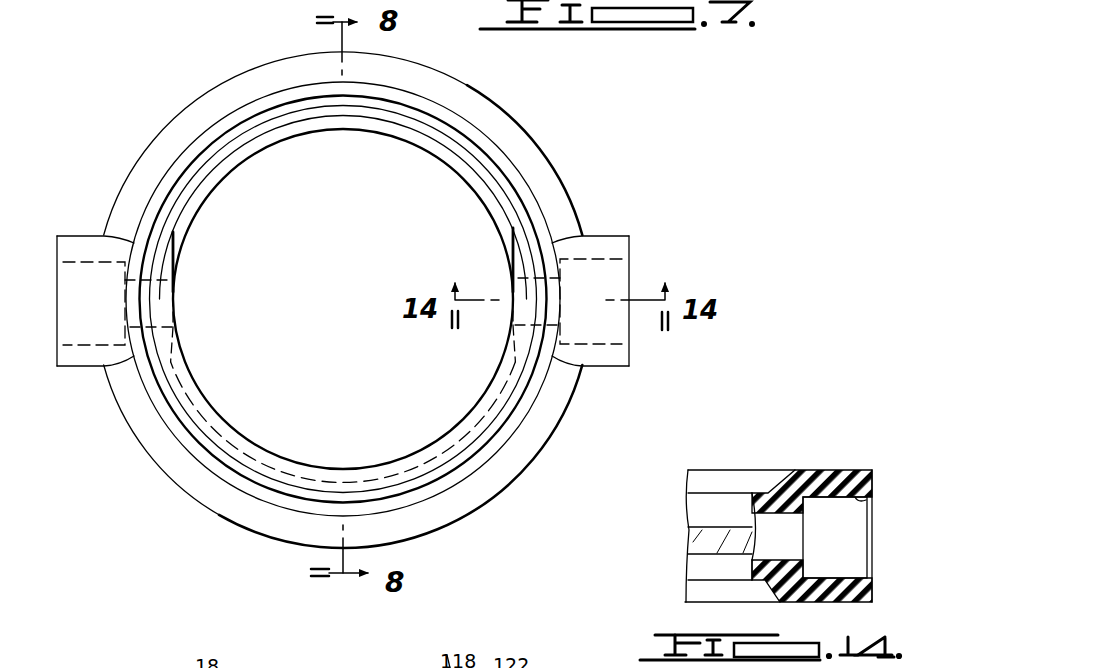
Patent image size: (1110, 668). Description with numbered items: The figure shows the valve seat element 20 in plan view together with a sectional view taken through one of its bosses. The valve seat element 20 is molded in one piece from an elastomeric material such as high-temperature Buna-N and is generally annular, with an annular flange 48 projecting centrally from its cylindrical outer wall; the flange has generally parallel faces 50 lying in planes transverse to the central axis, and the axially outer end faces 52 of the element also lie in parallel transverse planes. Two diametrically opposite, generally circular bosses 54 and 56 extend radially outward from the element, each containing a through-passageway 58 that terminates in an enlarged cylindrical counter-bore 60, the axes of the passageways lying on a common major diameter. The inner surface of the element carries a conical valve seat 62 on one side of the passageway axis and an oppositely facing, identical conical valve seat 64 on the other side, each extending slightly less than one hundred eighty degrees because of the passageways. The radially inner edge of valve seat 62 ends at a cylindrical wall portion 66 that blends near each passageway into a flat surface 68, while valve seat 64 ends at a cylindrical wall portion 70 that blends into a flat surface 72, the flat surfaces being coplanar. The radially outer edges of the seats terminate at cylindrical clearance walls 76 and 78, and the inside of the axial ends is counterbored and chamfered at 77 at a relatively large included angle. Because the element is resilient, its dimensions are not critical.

In FIG. 7, the valve seat element 20 is at (527, 124).
In FIG. 14, the valve seat element 20 is at (807, 517).
In FIG. 7, the annular flange 48 is at (523, 457).
In FIG. 7, the parallel faces 50 is at (138, 417).
In FIG. 7, the axially outer end faces 52 is at (177, 425).
In FIG. 7, the boss 54 is at (70, 266).
In FIG. 7, the boss 56 is at (606, 339).
In FIG. 14, the boss 56 is at (843, 472).
In FIG. 7, the through-passageway 58 is at (176, 293).
In FIG. 14, the through-passageway 58 is at (792, 554).
In FIG. 7, the counter-bore 60 is at (83, 343).
In FIG. 14, the counter-bore 60 is at (873, 498).
In FIG. 7, the conical valve seat 62 is at (357, 127).
In FIG. 14, the conical valve seat 62 is at (702, 538).
In FIG. 7, the conical valve seat 64 is at (297, 470).
In FIG. 7, the cylindrical wall portion 66 is at (293, 140).
In FIG. 7, the flat surface 68 is at (175, 357).
In FIG. 14, the flat surface 68 is at (752, 570).
In FIG. 7, the cylindrical wall portion 70 is at (372, 468).
In FIG. 7, the flat surface 72 is at (175, 249).
In FIG. 14, the flat surface 72 is at (752, 500).
In FIG. 7, the clearance wall 76 is at (427, 138).
In FIG. 7, the counterbore and chamfer 77 is at (438, 467).
In FIG. 14, the counterbore and chamfer 77 is at (773, 482).
In FIG. 7, the clearance wall 78 is at (262, 462).